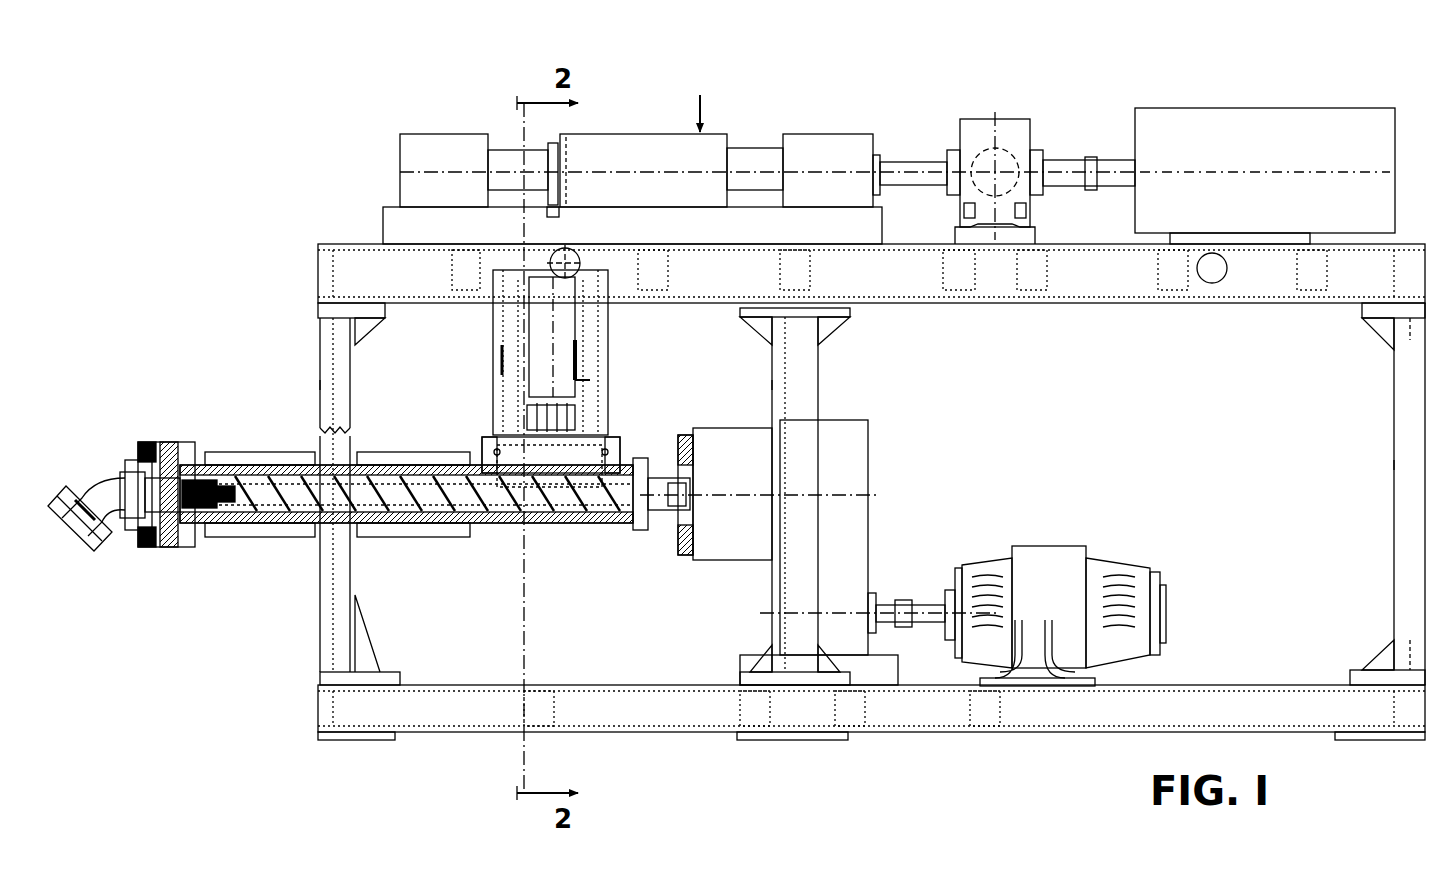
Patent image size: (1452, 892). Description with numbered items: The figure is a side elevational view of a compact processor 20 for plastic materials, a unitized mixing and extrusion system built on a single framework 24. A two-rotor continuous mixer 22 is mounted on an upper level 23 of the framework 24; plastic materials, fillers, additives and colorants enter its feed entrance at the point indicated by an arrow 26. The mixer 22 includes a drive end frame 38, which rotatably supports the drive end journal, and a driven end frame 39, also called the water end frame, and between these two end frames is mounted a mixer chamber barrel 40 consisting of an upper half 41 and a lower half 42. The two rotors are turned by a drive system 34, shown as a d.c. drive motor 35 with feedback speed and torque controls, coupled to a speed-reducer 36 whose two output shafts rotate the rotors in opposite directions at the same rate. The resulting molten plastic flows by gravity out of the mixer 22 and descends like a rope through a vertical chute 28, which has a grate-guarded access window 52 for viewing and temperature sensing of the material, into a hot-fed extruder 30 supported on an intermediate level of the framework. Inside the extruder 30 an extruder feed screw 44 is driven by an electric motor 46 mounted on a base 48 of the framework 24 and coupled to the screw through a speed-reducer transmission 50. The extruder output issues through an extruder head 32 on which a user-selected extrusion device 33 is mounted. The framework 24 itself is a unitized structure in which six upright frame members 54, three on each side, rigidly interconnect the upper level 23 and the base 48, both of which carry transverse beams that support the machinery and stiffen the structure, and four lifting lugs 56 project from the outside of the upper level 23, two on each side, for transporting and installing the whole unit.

The compact processor 20 is at (272, 60).
The two-rotor continuous mixer 22 is at (878, 139).
The upper level 23 is at (1095, 285).
The framework 24 is at (316, 287).
The arrow 26 is at (698, 100).
The vertical chute 28 is at (581, 378).
The hot-fed extruder 30 is at (406, 491).
The extruder head 32 is at (170, 441).
The extrusion device 33 is at (85, 465).
The drive system 34 is at (1265, 139).
The d.c. drive motor 35 is at (1265, 176).
The speed-reducer 36 is at (1000, 122).
The drive end frame 38 is at (866, 136).
The driven end frame 39 is at (428, 136).
The mixer chamber barrel 40 is at (659, 148).
The upper half 41 is at (636, 150).
The lower half 42 is at (662, 188).
The extruder feed screw 44 is at (412, 510).
The electric motor 46 is at (1066, 555).
The base 48 is at (1213, 695).
The speed-reducer transmission 50 is at (846, 530).
The grate-guarded access window 52 is at (580, 412).
The upright frame members 54 is at (320, 386).
The lifting lugs 56 is at (560, 258).